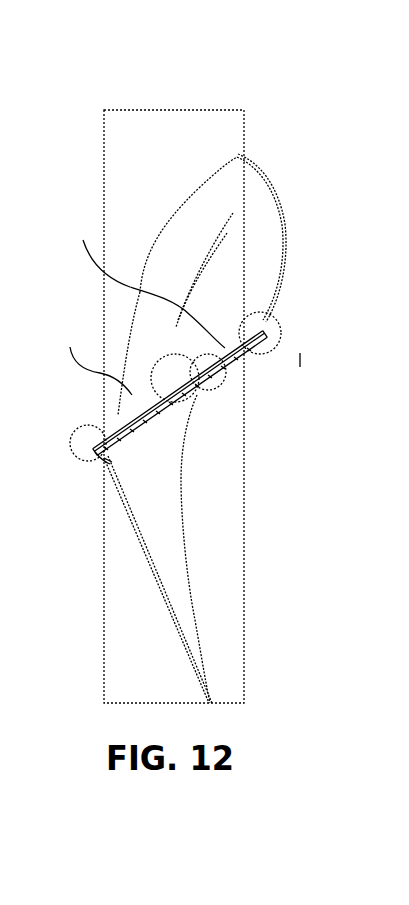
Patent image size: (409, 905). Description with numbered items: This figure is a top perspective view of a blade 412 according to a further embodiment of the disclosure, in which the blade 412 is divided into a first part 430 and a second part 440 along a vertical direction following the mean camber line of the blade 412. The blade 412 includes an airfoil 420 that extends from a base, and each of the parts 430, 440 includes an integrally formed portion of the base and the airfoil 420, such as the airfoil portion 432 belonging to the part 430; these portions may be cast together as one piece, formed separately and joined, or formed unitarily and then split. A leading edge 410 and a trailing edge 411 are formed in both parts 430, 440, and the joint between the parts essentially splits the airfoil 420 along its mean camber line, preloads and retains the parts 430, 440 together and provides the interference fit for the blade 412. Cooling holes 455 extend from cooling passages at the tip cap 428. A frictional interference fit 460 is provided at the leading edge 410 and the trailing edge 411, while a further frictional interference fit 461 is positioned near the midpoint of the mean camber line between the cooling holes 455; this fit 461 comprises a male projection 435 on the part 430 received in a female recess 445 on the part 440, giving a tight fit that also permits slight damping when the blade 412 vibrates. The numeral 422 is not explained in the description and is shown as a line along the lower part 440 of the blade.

The leading edge 410 is at (114, 478).
The trailing edge 411 is at (263, 180).
The blade 412 is at (327, 207).
The airfoil 420 is at (97, 533).
The leg edge line 422 is at (170, 561).
The tip cap 428 is at (228, 337).
The part 430 is at (192, 143).
The airfoil portion 432 is at (190, 237).
The male projection 435 is at (150, 392).
The part 440 is at (237, 534).
The female recess 445 is at (198, 400).
The cooling holes 455 is at (137, 307).
The frictional interference fit 460 is at (80, 421).
The frictional interference fit 461 is at (227, 370).